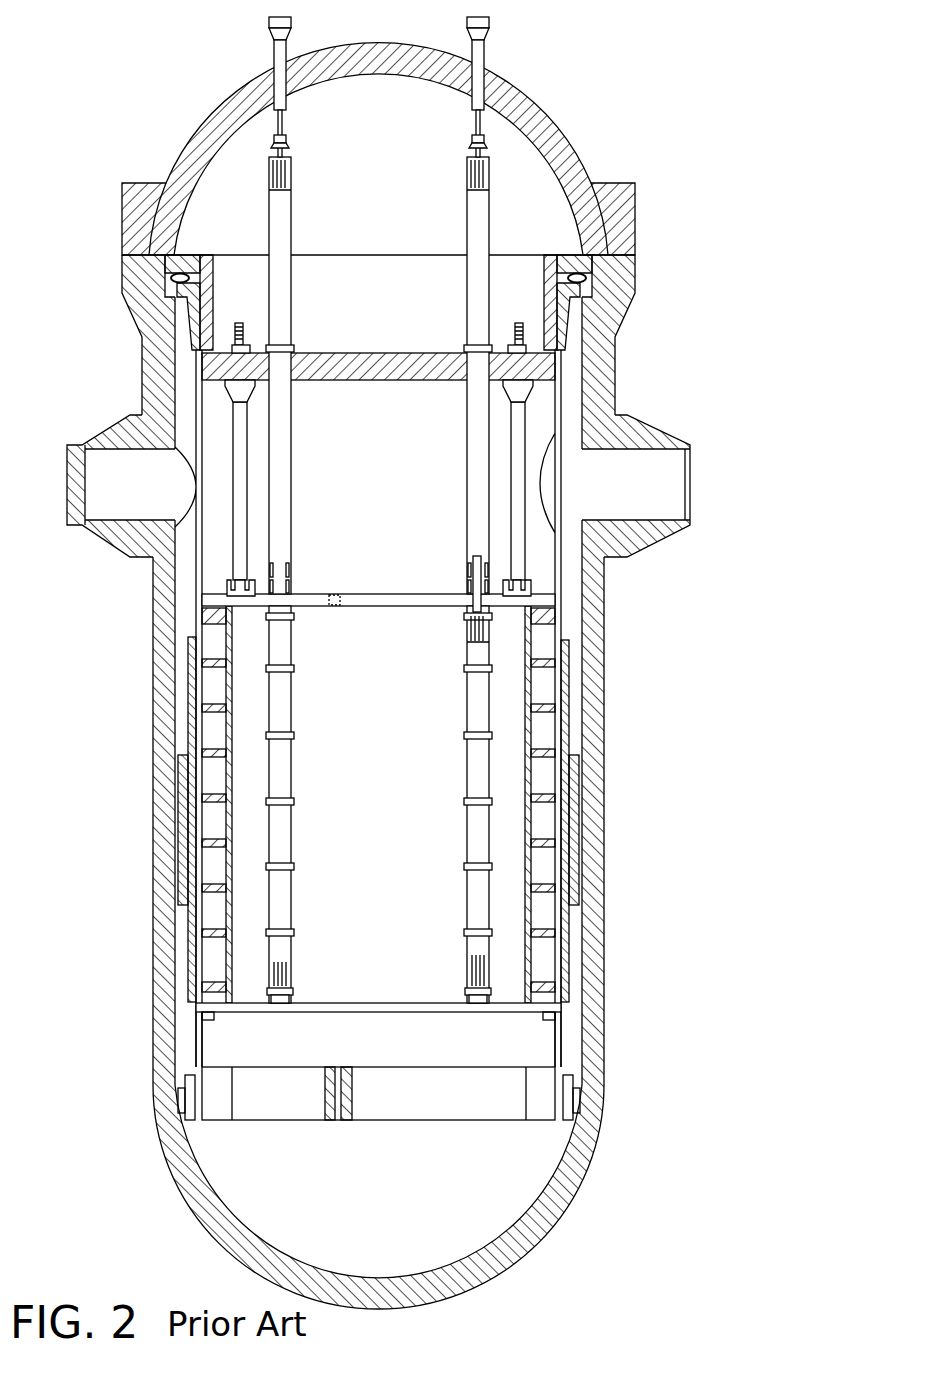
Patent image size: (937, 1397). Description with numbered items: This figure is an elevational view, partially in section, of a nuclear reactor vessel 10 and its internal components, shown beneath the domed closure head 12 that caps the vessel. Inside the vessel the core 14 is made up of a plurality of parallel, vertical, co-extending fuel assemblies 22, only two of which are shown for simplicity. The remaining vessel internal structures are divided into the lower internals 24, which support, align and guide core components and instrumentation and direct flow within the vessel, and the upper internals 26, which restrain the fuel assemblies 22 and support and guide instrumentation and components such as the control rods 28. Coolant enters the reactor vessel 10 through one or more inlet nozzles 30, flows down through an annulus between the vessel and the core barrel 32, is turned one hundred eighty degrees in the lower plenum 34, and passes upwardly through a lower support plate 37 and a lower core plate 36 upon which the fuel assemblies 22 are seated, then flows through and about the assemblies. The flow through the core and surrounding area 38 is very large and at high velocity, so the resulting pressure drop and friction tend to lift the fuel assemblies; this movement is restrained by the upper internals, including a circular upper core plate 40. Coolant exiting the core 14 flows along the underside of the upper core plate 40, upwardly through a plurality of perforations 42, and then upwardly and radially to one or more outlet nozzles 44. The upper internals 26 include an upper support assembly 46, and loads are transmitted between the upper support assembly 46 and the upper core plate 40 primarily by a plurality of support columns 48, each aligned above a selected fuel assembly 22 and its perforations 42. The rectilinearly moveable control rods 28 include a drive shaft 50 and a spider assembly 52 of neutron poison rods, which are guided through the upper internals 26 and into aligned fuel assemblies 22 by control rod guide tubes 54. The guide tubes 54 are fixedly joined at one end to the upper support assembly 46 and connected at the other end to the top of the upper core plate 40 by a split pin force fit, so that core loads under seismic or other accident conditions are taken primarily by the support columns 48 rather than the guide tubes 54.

The reactor vessel 10 is at (604, 675).
The closure head 12 is at (635, 223).
The core 14 is at (396, 799).
The fuel assemblies 22 is at (292, 703).
The lower internals 24 is at (394, 1054).
The upper internals 26 is at (399, 464).
The control rods 28 is at (467, 606).
The inlet nozzles 30 is at (105, 430).
The core barrel 32 is at (190, 594).
The lower plenum 34 is at (545, 1173).
The lower core plate 36 is at (440, 1002).
The lower support plate 37 is at (420, 1108).
The core and surrounding area 38 is at (430, 770).
The upper core plate 40 is at (418, 606).
The perforations 42 is at (335, 594).
The outlet nozzles 44 is at (650, 433).
The upper support assembly 46 is at (553, 255).
The support columns 48 is at (247, 482).
The drive shaft 50 is at (470, 565).
The spider assembly 52 is at (468, 590).
The control rod guide tubes 54 is at (288, 428).